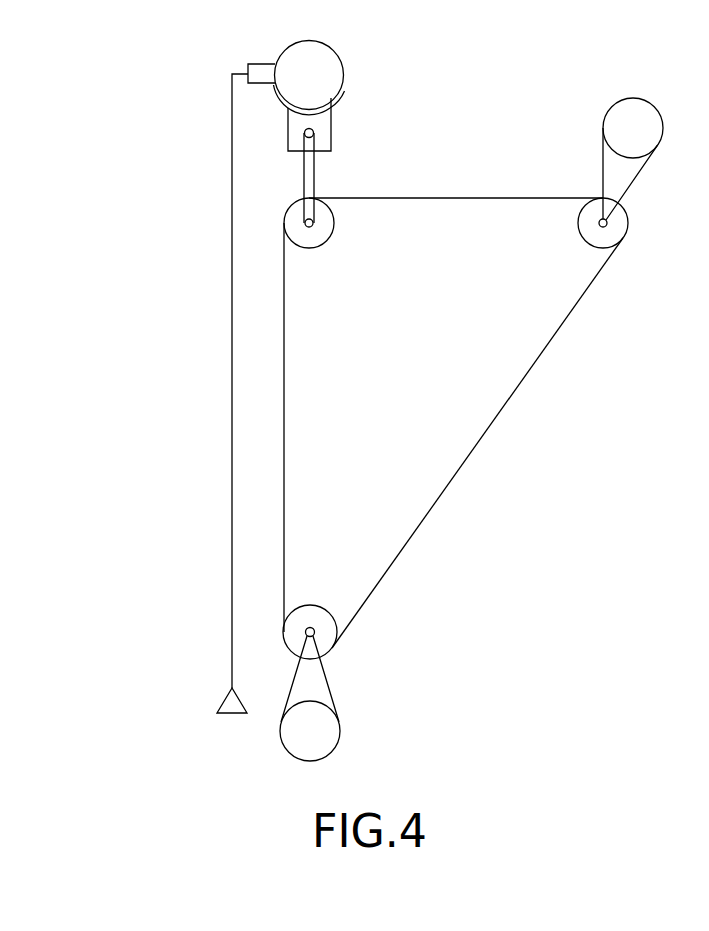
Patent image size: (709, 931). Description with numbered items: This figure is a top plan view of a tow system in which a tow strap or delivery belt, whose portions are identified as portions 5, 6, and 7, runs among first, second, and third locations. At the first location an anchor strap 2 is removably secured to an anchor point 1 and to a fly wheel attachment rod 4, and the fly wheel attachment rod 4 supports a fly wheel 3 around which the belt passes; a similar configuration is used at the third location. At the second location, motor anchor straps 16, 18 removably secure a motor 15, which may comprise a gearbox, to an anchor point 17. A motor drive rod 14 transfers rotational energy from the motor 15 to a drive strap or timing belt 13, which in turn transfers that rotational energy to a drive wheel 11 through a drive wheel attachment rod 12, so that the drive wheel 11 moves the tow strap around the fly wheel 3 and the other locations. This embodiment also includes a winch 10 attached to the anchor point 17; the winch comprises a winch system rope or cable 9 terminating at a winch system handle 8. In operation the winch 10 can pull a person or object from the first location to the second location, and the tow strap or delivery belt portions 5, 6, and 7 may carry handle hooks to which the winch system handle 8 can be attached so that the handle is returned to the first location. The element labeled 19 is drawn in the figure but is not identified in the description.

The anchor point 1 is at (335, 742).
The anchor strap 2 is at (333, 697).
The fly wheel 3 is at (323, 623).
The fly wheel attachment rod 4 is at (315, 634).
The tow strap or delivery belt portion 5 is at (285, 383).
The tow strap or delivery belt portion 6 is at (468, 453).
The tow strap or delivery belt portion 7 is at (487, 198).
The winch system handle 8 is at (227, 695).
The winch system rope or cable 9 is at (232, 468).
The winch 10 is at (255, 72).
The drive wheel 11 is at (312, 247).
The drive wheel attachment rod 12 is at (313, 222).
The drive strap or timing belt 13 is at (316, 175).
The motor drive rod 14 is at (318, 135).
The motor 15 is at (323, 128).
The motor anchor strap 16 is at (338, 98).
The anchor point 17 is at (333, 57).
The motor anchor strap 18 is at (343, 78).
The counterweight 19 is at (637, 130).